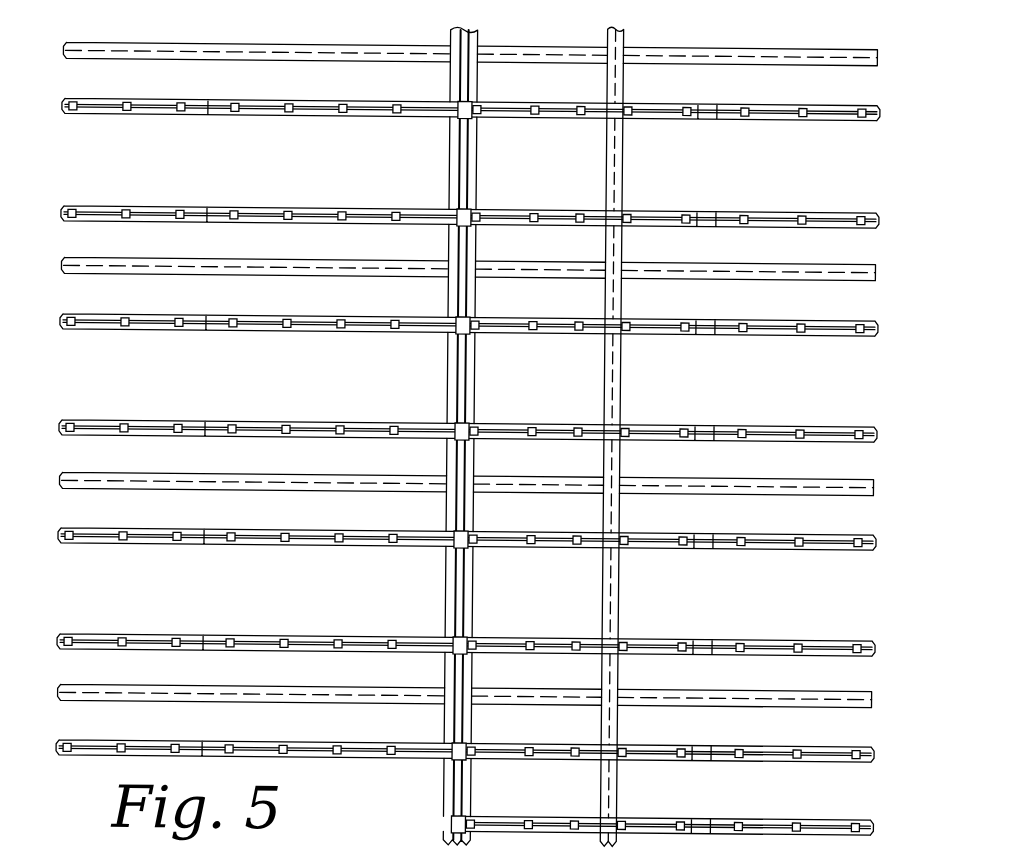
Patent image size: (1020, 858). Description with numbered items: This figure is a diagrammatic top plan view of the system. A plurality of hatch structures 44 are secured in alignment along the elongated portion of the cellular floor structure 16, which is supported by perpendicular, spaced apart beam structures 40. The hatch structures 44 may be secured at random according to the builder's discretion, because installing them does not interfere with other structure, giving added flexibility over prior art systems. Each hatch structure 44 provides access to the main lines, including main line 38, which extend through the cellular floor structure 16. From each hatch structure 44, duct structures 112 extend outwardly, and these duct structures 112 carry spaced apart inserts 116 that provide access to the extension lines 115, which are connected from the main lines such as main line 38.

The cellular floor structure 16 is at (448, 378).
The main line 38 is at (450, 598).
The beam structure 40 is at (244, 64).
The hatch structure 44 is at (449, 121).
The duct structure 112 is at (222, 119).
The extension line 115 is at (665, 210).
The insert 116 is at (177, 119).